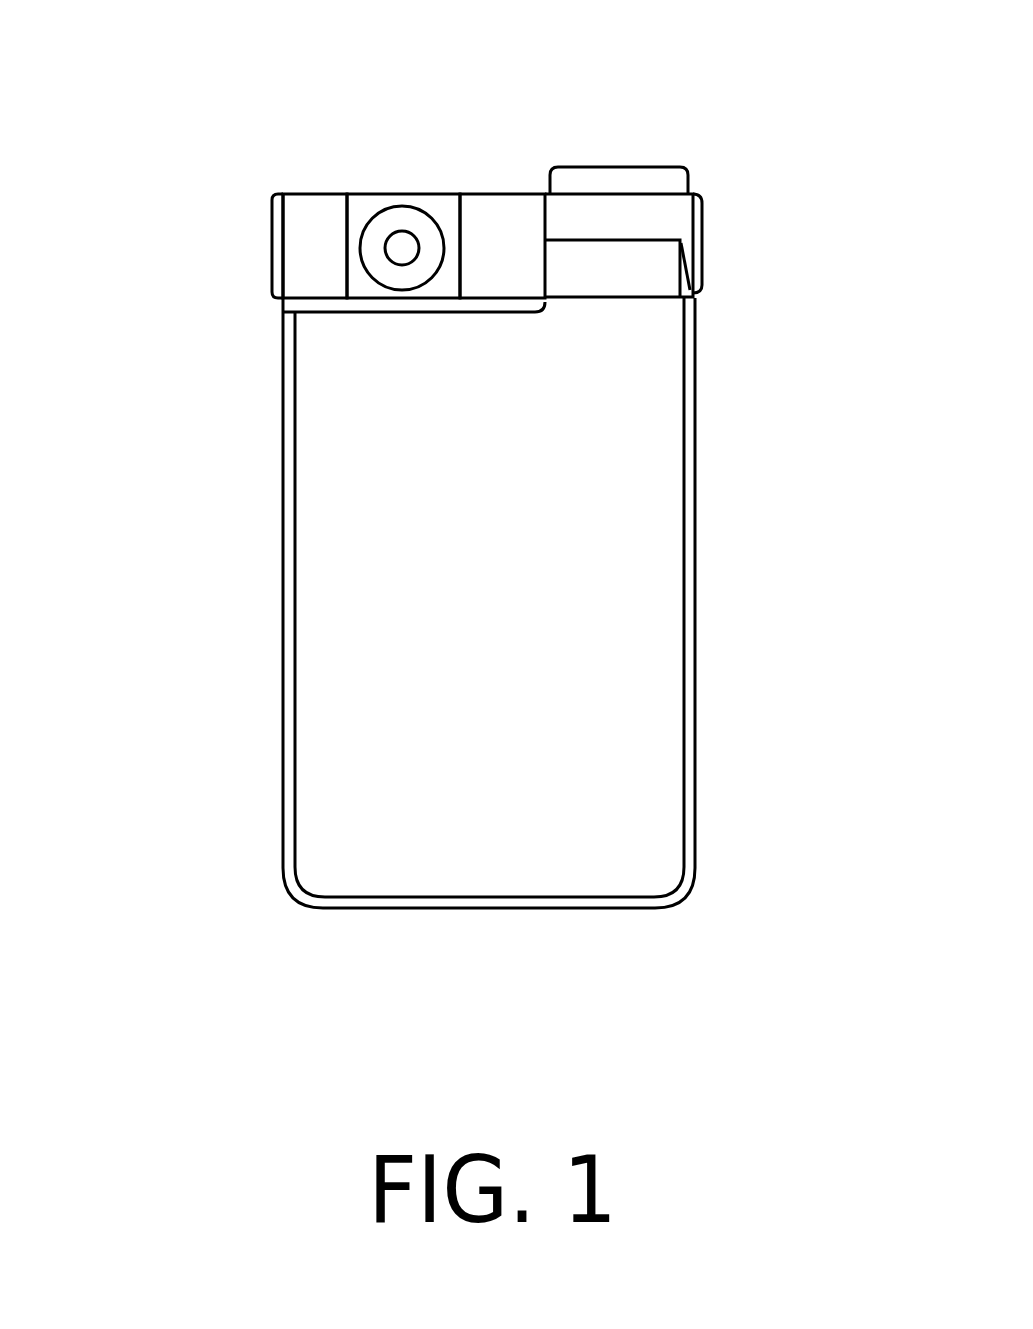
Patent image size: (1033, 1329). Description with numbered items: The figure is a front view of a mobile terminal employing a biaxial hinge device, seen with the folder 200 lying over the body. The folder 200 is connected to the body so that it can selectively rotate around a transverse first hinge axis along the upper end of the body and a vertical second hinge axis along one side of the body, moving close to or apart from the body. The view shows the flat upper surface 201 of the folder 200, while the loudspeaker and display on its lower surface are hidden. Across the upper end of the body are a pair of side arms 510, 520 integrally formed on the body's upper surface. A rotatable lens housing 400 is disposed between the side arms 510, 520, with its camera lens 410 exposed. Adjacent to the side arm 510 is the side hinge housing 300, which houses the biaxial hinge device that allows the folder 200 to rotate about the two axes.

The folder 200 is at (718, 642).
The flat upper surface 201 is at (642, 510).
The side hinge housing 300 is at (675, 219).
The rotatable lens housing 400 is at (367, 210).
The camera lens 410 is at (402, 235).
The side arm 510 is at (517, 212).
The side arm 520 is at (297, 248).